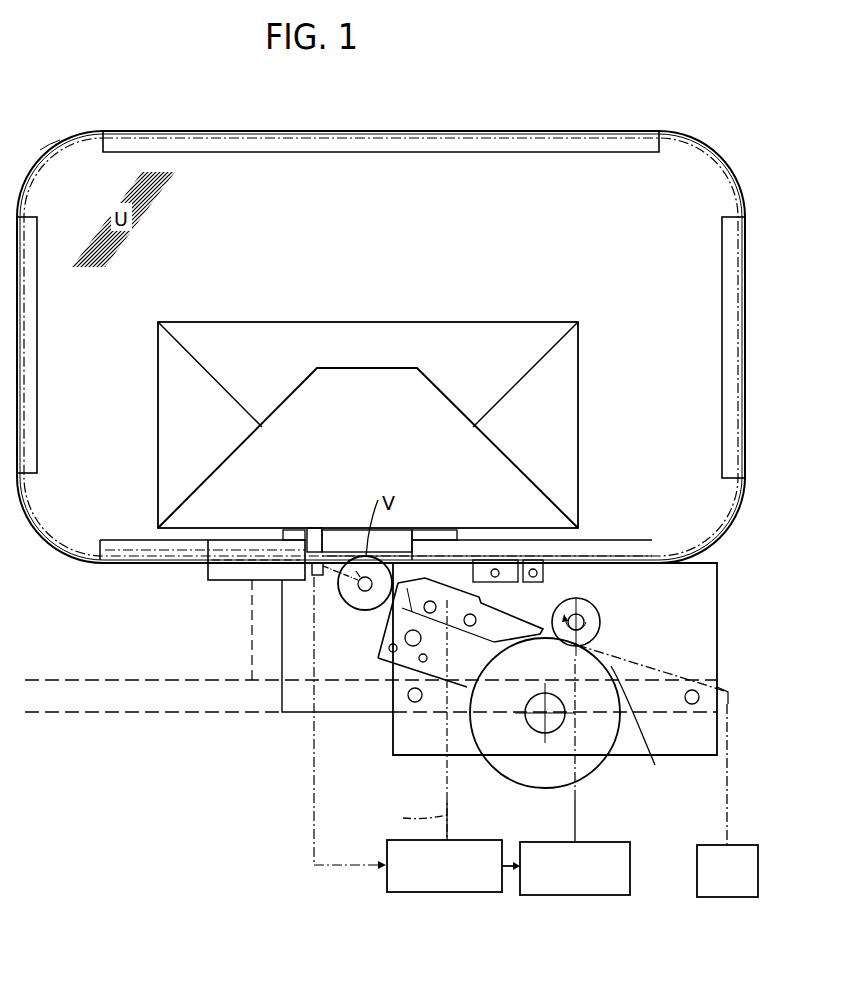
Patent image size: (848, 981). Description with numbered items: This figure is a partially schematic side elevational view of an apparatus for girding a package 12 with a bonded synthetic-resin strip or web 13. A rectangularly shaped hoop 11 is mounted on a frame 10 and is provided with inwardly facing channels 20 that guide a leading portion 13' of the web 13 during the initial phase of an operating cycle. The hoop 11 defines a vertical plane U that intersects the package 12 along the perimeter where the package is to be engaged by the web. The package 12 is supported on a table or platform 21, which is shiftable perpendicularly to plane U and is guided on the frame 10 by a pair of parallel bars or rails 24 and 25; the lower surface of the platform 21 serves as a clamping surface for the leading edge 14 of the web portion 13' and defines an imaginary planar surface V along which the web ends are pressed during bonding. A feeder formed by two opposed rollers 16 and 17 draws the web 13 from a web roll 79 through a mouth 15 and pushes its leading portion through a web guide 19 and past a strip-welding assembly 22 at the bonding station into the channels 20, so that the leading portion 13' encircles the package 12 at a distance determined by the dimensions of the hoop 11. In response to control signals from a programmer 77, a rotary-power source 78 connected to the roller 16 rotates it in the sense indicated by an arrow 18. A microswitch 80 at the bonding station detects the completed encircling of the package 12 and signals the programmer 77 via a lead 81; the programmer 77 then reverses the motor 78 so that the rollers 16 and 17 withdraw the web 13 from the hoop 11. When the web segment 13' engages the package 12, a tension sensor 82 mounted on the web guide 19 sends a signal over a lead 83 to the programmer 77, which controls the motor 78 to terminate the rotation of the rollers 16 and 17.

The frame 10 is at (140, 692).
The hoop 11 is at (258, 127).
The package 12 is at (425, 337).
The web 13 is at (652, 743).
The leading portion of web 13' is at (78, 161).
The leading edge of web 14 is at (322, 538).
The mouth of feeder 15 is at (639, 725).
The roller 16 is at (590, 610).
The counterroller 17 is at (497, 740).
The arrow 18 is at (585, 624).
The web guide 19 is at (503, 614).
The channels 20 is at (45, 455).
The platform 21 is at (342, 537).
The strip-welding assembly 22 is at (348, 614).
The rail 24 is at (288, 532).
The rail 25 is at (437, 537).
The programmer 77 is at (452, 878).
The rotary-power source 78 is at (605, 887).
The web roll 79 is at (730, 897).
The microswitch 80 is at (313, 576).
The lead 81 is at (312, 766).
The tension sensor 82 is at (457, 612).
The lead 83 is at (412, 816).